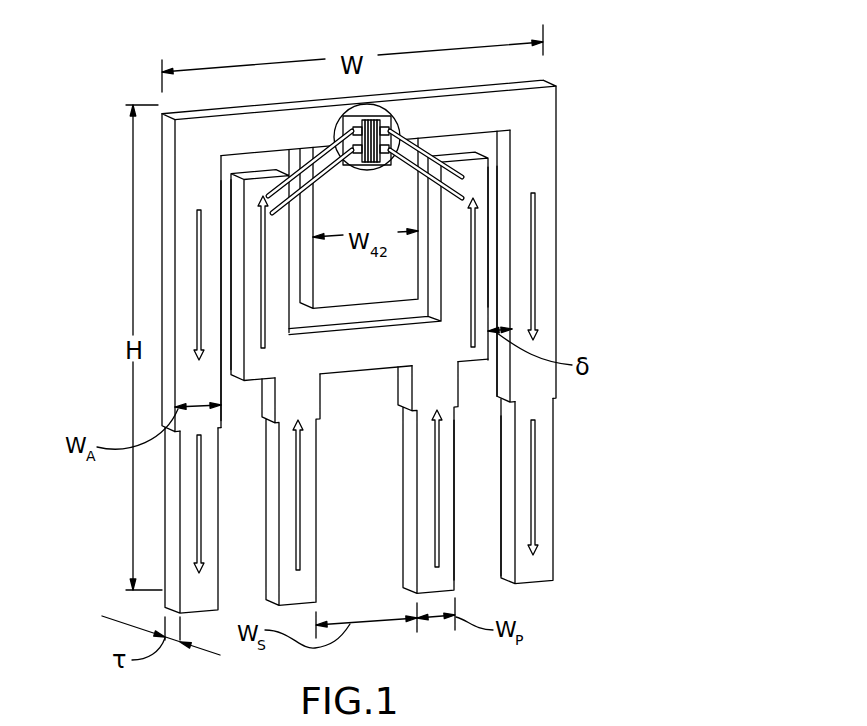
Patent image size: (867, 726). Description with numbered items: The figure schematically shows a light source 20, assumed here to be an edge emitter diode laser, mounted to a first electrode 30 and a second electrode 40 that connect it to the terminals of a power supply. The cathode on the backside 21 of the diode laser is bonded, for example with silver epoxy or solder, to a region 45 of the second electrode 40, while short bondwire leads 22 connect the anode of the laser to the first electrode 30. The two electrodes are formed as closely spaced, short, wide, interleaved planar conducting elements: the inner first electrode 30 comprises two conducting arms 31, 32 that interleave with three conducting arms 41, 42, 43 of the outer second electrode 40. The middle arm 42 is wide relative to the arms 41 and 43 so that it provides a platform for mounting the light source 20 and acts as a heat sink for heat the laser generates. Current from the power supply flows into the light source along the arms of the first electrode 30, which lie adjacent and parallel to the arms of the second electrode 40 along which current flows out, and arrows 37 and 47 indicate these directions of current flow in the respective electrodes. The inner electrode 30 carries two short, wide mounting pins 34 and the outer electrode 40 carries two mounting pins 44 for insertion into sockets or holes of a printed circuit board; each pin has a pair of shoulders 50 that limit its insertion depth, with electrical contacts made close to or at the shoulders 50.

The light source 20 is at (405, 122).
The backside 21 is at (334, 130).
The bondwire leads 22 is at (458, 178).
The first electrode 30 is at (359, 372).
The conducting arm 31 is at (275, 275).
The conducting arm 32 is at (455, 270).
The mounting pins 34 is at (313, 599).
The arrows 37 is at (262, 326).
The second electrode 40 is at (359, 346).
The conducting arm 41 is at (218, 203).
The middle arm 42 is at (385, 207).
The conducting arm 43 is at (552, 183).
The mounting pins 44 is at (214, 604).
The region 45 is at (333, 128).
The arrows 47 is at (197, 265).
The shoulders 50 is at (218, 428).